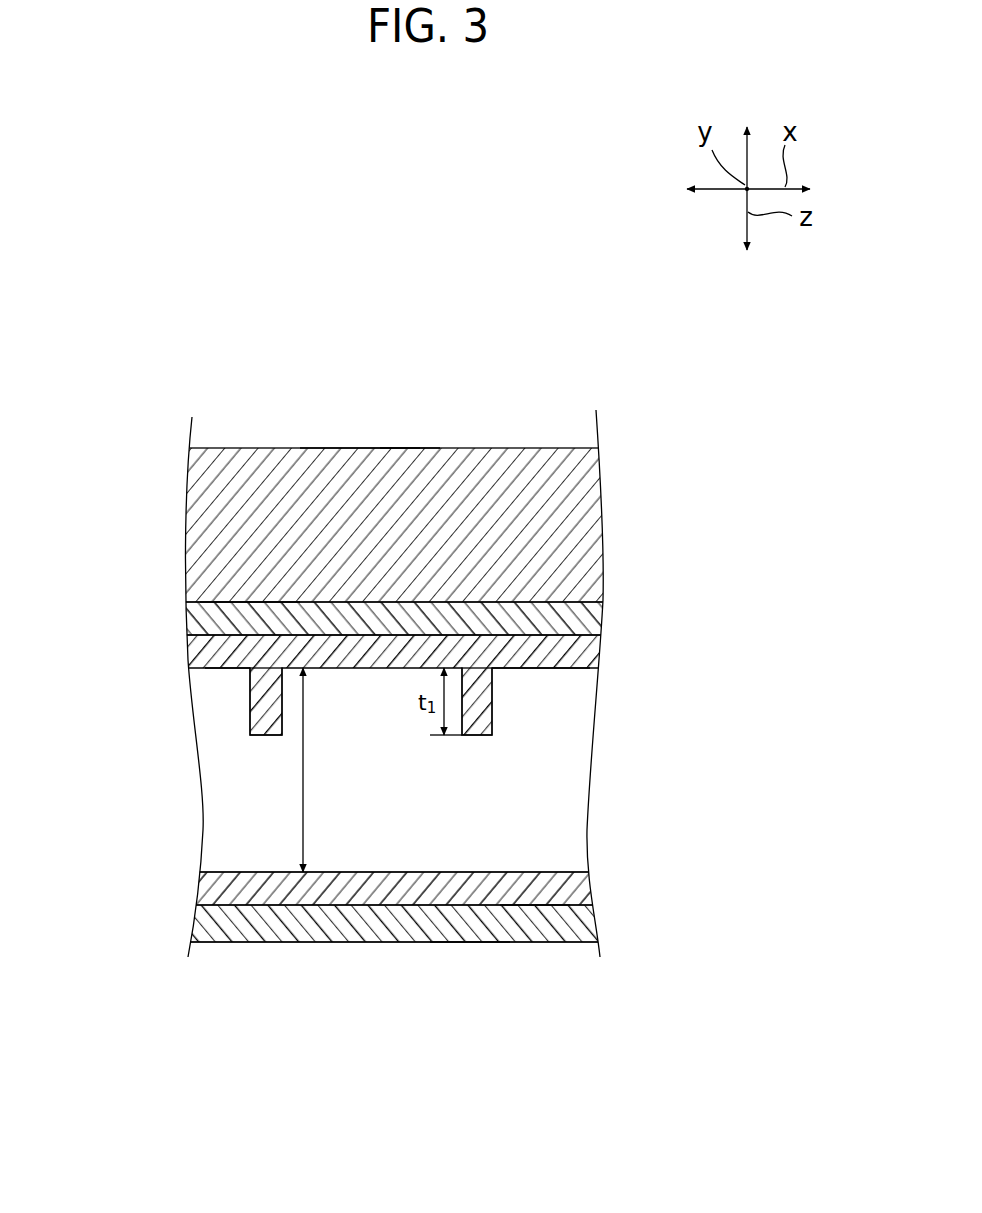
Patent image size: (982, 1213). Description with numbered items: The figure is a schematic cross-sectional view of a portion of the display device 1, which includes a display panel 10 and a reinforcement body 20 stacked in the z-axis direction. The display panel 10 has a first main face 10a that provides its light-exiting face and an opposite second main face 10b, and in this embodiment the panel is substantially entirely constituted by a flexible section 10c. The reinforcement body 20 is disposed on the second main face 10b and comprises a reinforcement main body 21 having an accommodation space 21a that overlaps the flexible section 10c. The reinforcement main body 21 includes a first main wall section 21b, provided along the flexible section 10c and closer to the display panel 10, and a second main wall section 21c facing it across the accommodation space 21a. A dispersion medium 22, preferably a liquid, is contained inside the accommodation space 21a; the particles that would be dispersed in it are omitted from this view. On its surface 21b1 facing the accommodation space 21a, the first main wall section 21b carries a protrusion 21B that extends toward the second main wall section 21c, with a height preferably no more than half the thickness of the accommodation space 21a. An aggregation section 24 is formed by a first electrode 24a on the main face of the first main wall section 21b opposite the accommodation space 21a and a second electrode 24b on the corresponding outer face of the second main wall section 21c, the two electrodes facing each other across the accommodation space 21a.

The display device 1 is at (510, 350).
The display panel 10 is at (292, 446).
The first main face 10a is at (347, 448).
The second main face 10b is at (227, 637).
The flexible section 10c is at (400, 448).
The reinforcement body 20 is at (237, 944).
The reinforcement main body 21 is at (325, 905).
The accommodation space 21a is at (557, 668).
The protrusion 21B is at (492, 718).
The first main wall section 21b is at (500, 635).
The surface 21b1 is at (217, 668).
The second main wall section 21c is at (529, 905).
The dispersion medium 22 is at (567, 820).
The aggregation section 24 is at (470, 945).
The first electrode 24a is at (438, 602).
The second electrode 24b is at (395, 942).